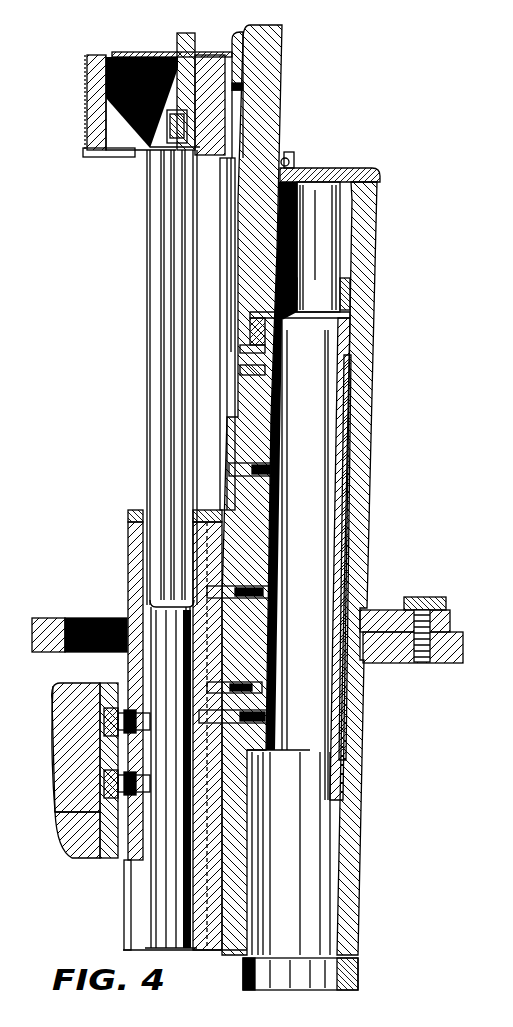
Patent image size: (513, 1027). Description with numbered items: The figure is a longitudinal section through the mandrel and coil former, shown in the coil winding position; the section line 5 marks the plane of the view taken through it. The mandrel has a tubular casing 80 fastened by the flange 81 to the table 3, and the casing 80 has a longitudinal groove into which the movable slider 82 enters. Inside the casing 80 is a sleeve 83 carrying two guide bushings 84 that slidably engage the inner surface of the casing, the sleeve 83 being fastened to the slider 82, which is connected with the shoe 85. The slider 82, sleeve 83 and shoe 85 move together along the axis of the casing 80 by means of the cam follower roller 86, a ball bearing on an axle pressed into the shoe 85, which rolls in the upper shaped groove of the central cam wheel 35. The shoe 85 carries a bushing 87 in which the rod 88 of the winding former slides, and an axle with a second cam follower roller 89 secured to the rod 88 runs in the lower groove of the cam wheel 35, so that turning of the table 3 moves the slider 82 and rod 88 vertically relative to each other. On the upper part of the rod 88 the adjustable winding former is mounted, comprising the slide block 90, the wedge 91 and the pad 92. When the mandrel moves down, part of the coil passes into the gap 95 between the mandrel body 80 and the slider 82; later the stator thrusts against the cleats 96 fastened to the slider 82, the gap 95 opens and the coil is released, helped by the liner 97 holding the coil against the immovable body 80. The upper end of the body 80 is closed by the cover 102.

The table 3 is at (443, 643).
The section line 5— 5 is at (87, 98).
The central cam wheel 35 is at (78, 774).
The casing 80 is at (358, 450).
The flange 81 is at (448, 610).
The movable slider 82 is at (263, 57).
The sleeve 83 is at (337, 420).
The guide bushings 84 is at (347, 356).
The shoe 85 is at (128, 568).
The cam follower roller 86 is at (99, 690).
The bushing 87 is at (135, 512).
The rod 88 is at (168, 398).
The second cam follower roller 89 is at (80, 817).
The slide block 90 is at (87, 80).
The wedge 91 is at (181, 30).
The pad 92 is at (209, 65).
The gap 95 is at (288, 157).
The cleats 96 is at (228, 247).
The liner 97 is at (348, 287).
The cover 102 is at (375, 173).